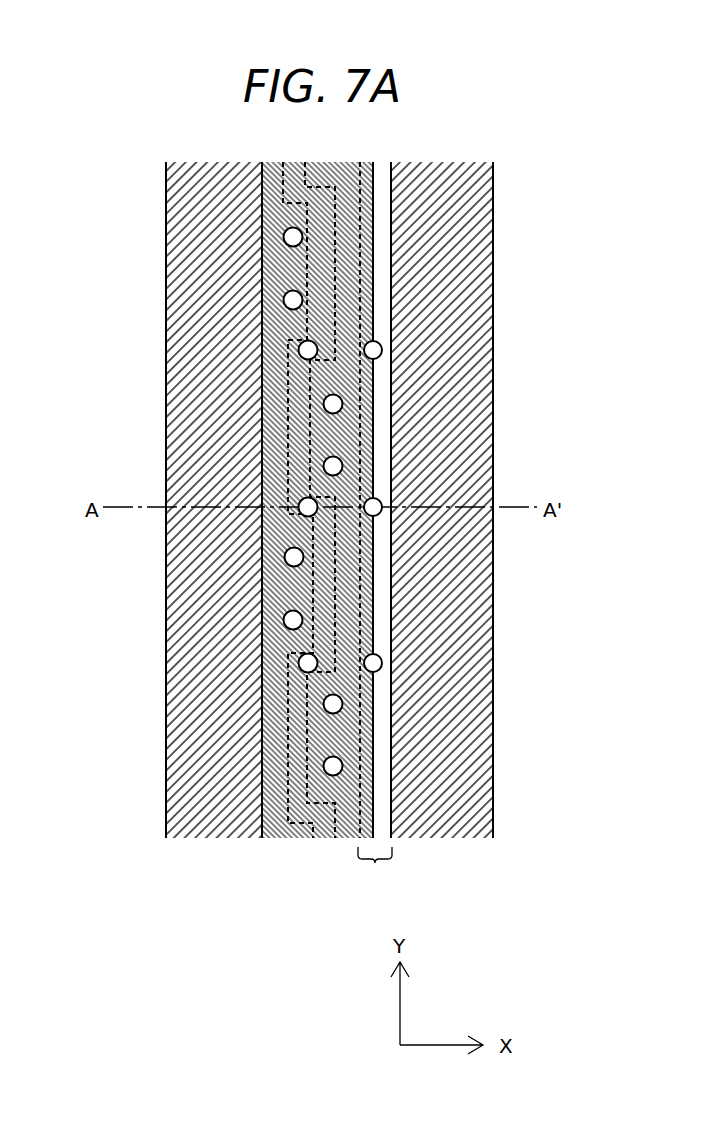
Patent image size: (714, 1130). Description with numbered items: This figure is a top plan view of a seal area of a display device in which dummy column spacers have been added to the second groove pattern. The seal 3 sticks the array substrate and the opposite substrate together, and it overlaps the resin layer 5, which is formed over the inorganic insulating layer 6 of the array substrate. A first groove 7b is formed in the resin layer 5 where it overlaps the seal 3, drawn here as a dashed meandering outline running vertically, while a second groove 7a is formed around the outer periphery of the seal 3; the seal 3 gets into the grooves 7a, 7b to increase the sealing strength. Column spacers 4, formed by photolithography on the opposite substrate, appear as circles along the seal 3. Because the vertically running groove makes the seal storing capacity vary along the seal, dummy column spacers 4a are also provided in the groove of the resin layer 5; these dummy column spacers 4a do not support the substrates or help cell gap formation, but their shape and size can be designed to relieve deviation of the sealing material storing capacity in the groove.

The seal 3 is at (262, 318).
The column spacers 4 is at (284, 234).
The dummy column spacers 4a is at (383, 351).
The resin layer 5 is at (491, 267).
The inorganic insulating layer 6 is at (386, 615).
The second groove 7a is at (375, 528).
The first groove 7b is at (287, 766).